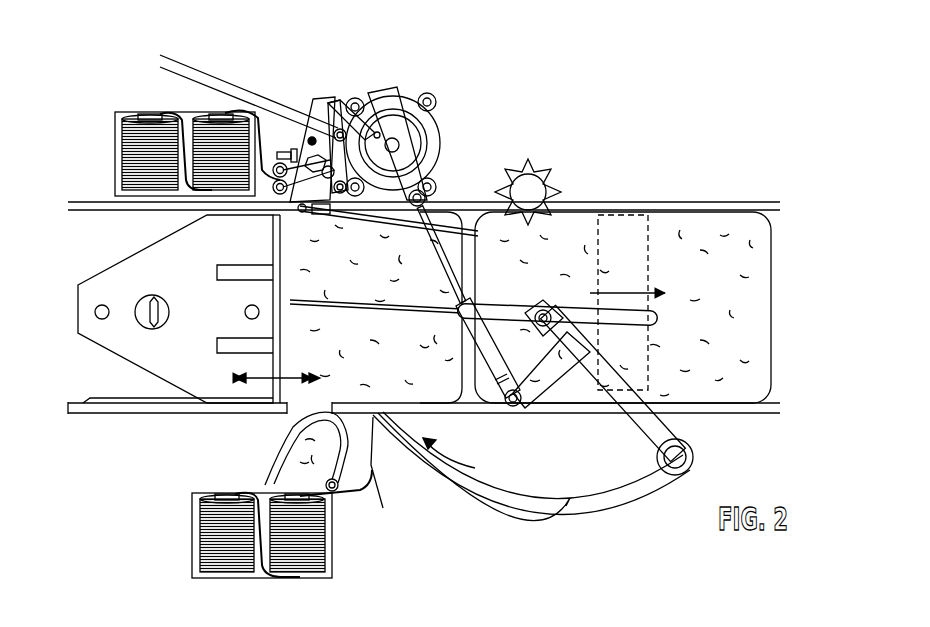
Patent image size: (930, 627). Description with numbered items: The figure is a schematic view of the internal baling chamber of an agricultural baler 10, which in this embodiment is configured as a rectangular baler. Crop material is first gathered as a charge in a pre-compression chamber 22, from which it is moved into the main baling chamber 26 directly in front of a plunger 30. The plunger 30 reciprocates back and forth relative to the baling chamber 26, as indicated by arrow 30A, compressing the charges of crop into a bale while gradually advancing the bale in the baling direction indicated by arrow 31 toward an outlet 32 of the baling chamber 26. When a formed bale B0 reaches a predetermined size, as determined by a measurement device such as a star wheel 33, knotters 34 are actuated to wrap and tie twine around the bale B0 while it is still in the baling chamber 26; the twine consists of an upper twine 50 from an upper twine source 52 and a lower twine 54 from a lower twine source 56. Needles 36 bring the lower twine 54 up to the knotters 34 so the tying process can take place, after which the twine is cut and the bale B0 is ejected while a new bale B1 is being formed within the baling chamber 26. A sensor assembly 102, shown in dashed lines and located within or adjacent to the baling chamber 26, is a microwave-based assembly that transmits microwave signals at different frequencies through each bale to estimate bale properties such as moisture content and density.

The agricultural baler 10 is at (703, 82).
The pre-compression chamber 22 is at (282, 452).
The main baling chamber 26 is at (668, 204).
The plunger 30 is at (116, 355).
The arrow 30A is at (290, 376).
The arrow 31 is at (630, 292).
The outlet 32 is at (788, 360).
The star wheel 33 is at (545, 180).
The knotters 34 is at (345, 85).
The needles 36 is at (531, 510).
The upper twine 50 is at (280, 166).
The upper twine source 52 is at (118, 148).
The lower twine 54 is at (370, 475).
The lower twine source 56 is at (193, 535).
The sensor assembly 102 is at (660, 348).
The formed bale B0 is at (757, 307).
The new bale B1 is at (342, 332).